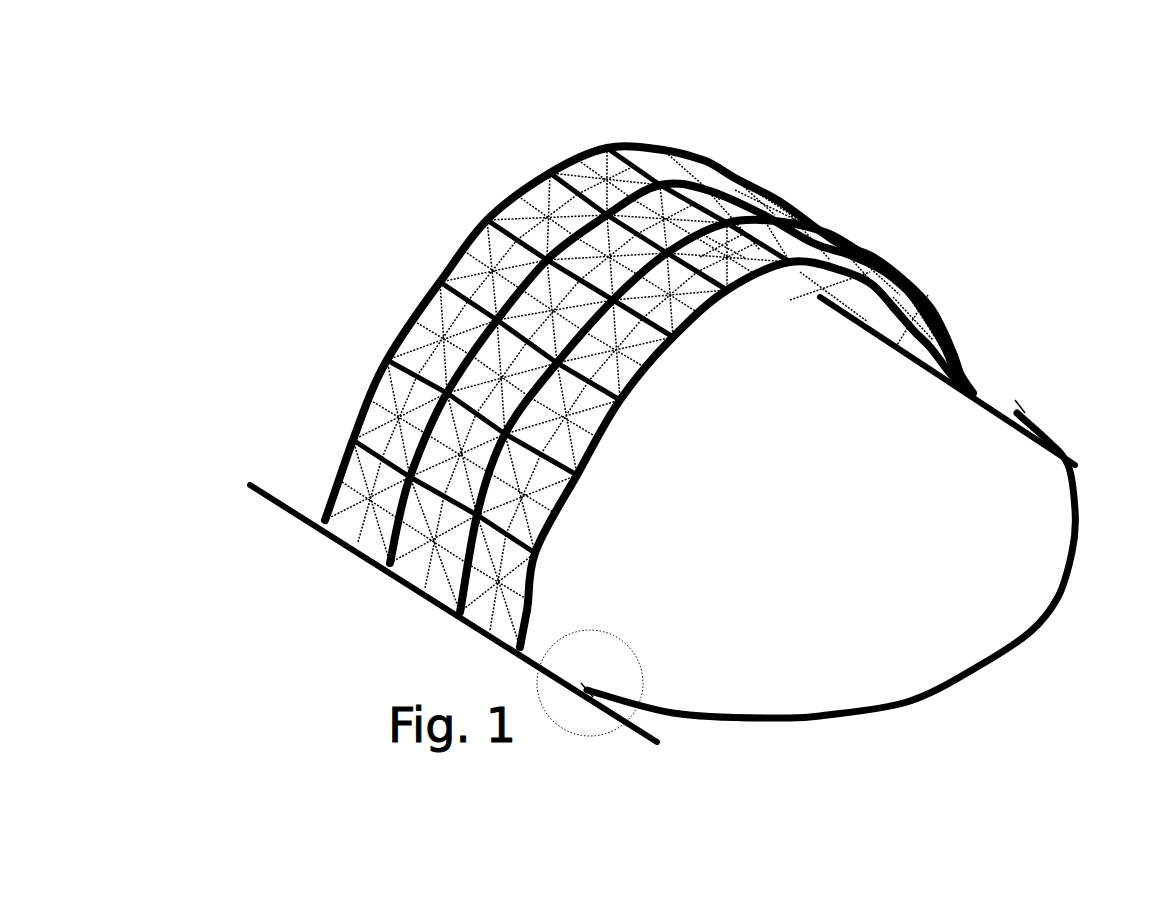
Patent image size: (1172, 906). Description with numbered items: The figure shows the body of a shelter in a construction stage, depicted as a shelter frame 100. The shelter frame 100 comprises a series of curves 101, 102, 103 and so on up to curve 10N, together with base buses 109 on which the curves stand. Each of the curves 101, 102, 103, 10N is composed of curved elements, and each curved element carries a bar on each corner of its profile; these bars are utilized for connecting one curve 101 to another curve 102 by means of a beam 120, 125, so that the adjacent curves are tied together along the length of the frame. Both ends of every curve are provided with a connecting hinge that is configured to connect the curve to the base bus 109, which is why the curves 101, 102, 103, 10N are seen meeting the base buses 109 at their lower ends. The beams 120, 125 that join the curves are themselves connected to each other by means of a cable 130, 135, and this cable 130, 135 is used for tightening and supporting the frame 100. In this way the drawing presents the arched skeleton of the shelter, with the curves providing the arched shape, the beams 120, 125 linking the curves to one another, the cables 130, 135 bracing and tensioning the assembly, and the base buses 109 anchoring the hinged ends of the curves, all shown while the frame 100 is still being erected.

The shelter frame 100 is at (450, 150).
The curve 10N is at (598, 142).
The curve 101 is at (1078, 512).
The curve 102 is at (874, 256).
The curve 103 is at (778, 200).
The base bus 109 is at (277, 508).
The beam 120 is at (658, 316).
The beam 125 is at (605, 381).
The cable 130 is at (552, 472).
The cable 135 is at (540, 508).